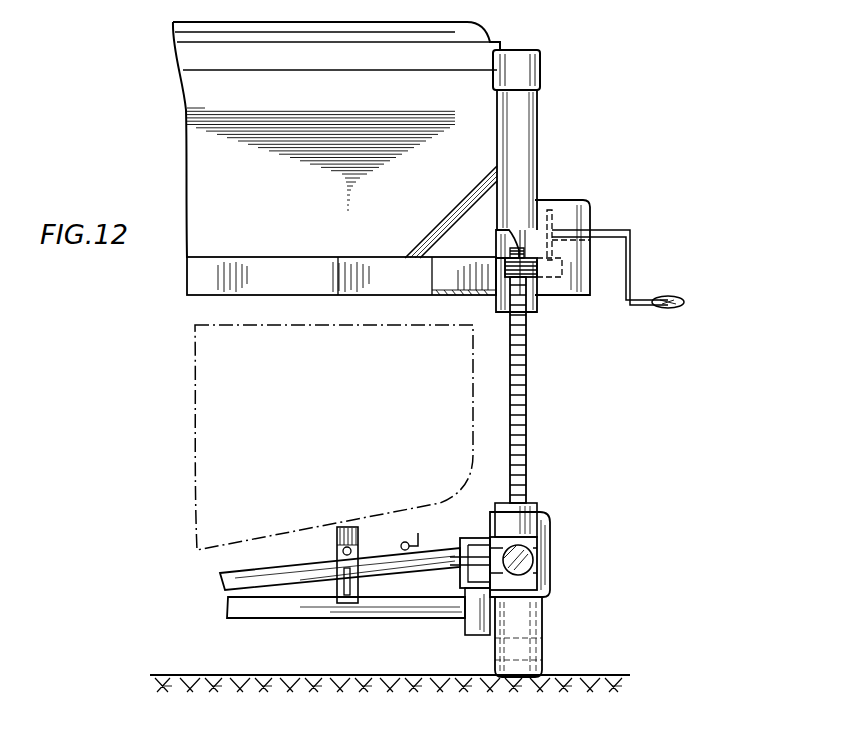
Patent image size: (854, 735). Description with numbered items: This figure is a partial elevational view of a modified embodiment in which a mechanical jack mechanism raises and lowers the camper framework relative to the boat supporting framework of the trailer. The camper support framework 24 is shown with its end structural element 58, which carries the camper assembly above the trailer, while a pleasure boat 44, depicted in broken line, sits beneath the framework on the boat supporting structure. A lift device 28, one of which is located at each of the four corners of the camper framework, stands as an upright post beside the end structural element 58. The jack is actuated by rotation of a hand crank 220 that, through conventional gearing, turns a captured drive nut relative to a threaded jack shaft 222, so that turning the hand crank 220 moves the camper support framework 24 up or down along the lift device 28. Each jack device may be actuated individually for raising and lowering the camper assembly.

The camper support framework 24 is at (347, 258).
The end structural element 58 is at (246, 266).
The lift device 28 is at (539, 142).
The hand crank 220 is at (632, 262).
The threaded jack shaft 222 is at (526, 420).
The boat 44 is at (225, 418).